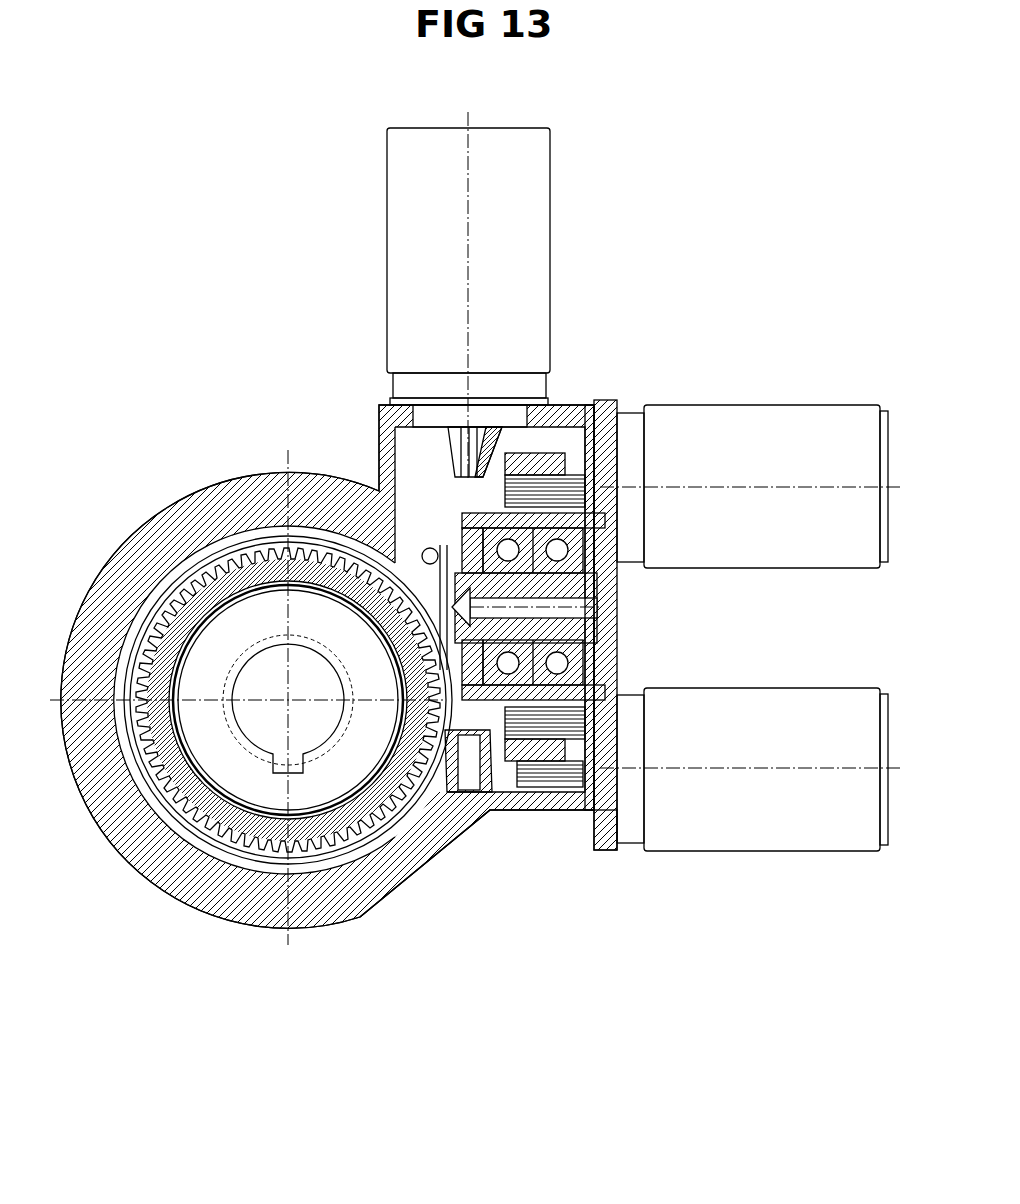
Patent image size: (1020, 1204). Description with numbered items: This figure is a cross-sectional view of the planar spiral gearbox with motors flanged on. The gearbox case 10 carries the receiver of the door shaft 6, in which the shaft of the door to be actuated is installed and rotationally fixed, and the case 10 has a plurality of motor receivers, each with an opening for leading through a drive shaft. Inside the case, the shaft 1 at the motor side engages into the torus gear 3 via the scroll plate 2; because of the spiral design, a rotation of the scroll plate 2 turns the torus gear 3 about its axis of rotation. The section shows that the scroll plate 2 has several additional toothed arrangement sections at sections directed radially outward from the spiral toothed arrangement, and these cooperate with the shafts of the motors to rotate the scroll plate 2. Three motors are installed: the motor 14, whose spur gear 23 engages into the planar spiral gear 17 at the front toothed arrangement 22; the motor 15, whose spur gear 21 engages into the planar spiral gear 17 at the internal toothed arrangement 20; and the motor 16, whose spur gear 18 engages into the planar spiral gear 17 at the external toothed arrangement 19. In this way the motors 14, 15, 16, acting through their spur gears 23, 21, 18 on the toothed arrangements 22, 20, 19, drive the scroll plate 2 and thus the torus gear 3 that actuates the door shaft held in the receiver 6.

The shaft at the motor side 1 is at (619, 581).
The scroll plate 2 is at (375, 485).
The torus gear 3 is at (470, 835).
The receiver of the door shaft 6 is at (123, 548).
The gearbox case 10 is at (380, 907).
The motor 14 is at (665, 733).
The motor 15 is at (690, 450).
The motor 16 is at (513, 220).
The planar spiral gear 17 is at (518, 420).
The spur gear 18 is at (467, 420).
The external toothed arrangement 19 is at (497, 420).
The internal toothed arrangement 20 is at (563, 423).
The spur gear 21 is at (578, 423).
The front toothed arrangement 22 is at (547, 423).
The spur gear 23 is at (598, 850).